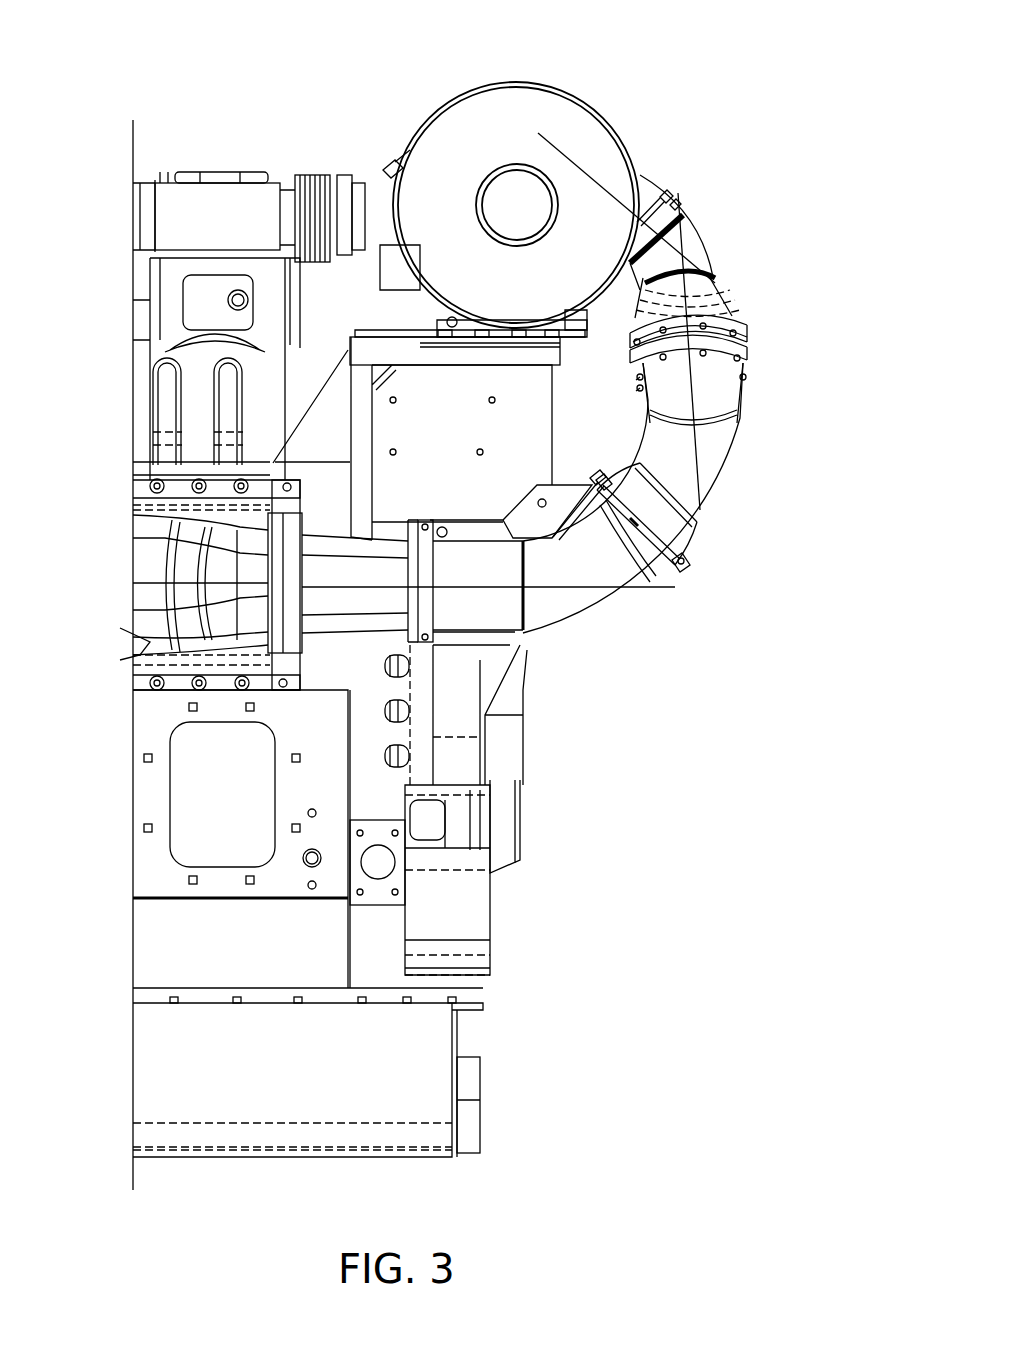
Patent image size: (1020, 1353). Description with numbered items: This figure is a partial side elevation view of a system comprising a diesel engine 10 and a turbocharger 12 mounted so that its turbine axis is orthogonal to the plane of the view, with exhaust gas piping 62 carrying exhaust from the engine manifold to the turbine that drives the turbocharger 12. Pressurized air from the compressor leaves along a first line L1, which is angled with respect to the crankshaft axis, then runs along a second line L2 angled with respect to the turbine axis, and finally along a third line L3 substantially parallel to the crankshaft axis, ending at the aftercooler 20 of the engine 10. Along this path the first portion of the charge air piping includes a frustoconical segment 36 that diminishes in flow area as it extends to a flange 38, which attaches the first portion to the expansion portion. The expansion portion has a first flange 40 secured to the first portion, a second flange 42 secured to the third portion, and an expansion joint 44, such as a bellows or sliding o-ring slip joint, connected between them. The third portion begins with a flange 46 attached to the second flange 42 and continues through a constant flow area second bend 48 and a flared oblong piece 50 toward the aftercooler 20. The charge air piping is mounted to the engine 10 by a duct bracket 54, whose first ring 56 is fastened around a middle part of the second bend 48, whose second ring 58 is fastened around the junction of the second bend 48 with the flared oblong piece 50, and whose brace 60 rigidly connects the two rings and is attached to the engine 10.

The diesel engine 10 is at (113, 803).
The turbocharger 12 is at (596, 78).
The aftercooler 20 is at (213, 575).
The frustoconical segment 36 is at (715, 262).
The flange 38 is at (698, 300).
The first flange 40 is at (745, 320).
The second flange 42 is at (750, 368).
The expansion joint 44 is at (748, 352).
The flange 46 is at (752, 385).
The constant flow area second bend 48 is at (587, 572).
The flared oblong piece 50 is at (362, 572).
The duct bracket 54 is at (556, 488).
The first ring 56 is at (685, 560).
The second ring 58 is at (428, 598).
The brace 60 is at (543, 532).
The exhaust gas piping 62 is at (216, 195).
The first line L1 is at (580, 165).
The second line L2 is at (700, 428).
The third line L3 is at (646, 588).